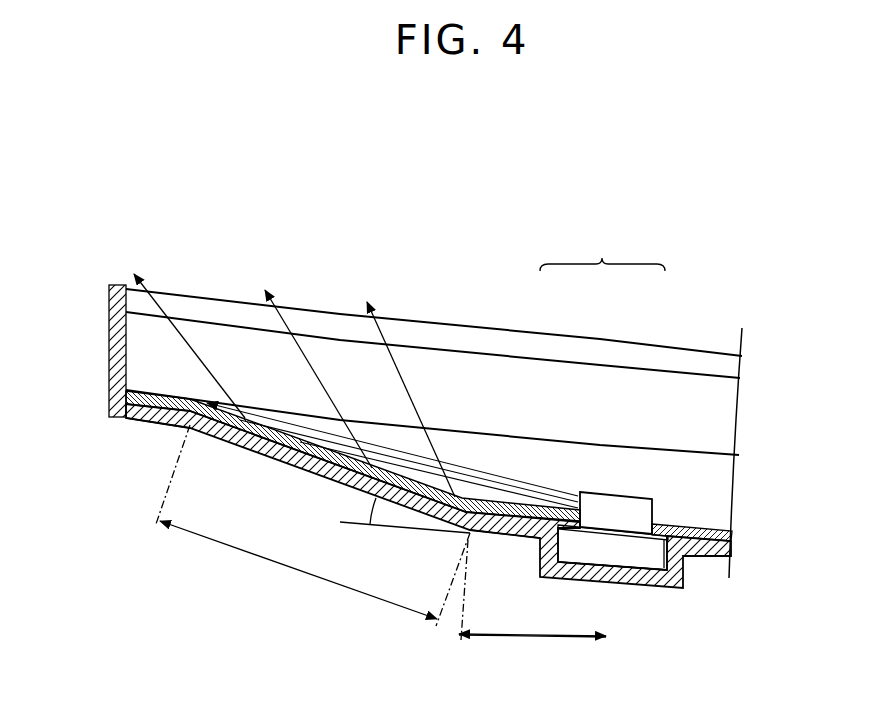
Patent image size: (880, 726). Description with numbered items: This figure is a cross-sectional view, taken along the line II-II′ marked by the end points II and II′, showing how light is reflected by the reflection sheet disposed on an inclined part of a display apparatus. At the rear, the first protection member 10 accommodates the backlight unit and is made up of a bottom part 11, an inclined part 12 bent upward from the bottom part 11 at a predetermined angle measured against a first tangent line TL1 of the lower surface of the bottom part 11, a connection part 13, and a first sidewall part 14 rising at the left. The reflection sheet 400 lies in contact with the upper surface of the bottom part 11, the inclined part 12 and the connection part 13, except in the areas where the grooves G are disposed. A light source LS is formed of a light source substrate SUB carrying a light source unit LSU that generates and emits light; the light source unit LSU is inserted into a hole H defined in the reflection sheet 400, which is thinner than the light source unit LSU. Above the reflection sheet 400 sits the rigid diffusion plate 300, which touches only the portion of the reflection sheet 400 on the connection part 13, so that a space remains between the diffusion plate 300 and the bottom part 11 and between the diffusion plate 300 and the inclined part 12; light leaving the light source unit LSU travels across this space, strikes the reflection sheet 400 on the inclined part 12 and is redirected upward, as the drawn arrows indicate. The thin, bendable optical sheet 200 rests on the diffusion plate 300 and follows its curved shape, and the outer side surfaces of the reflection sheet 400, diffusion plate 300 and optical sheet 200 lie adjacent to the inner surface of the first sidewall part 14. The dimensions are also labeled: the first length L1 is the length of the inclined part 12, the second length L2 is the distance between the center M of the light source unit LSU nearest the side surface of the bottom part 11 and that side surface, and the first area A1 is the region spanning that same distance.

The first protection member 10 is at (727, 553).
The bottom part 11 is at (505, 539).
The inclined part 12 is at (243, 436).
The connection part 13 is at (160, 420).
The first sidewall part 14 is at (108, 350).
The optical sheet 200 is at (728, 370).
The diffusion plate 300 is at (728, 420).
The reflection sheet 400 is at (727, 535).
The light source LS is at (602, 252).
The light source substrate SUB is at (580, 492).
The light source unit LSU is at (600, 505).
The hole H is at (637, 523).
The pocket bottom P is at (627, 581).
The groove G is at (652, 557).
The center of the light source unit M is at (618, 490).
The first tangent line TL1 is at (383, 522).
The first length L1 is at (313, 525).
The first area A1 is at (532, 590).
The second length L2 is at (532, 650).
The section line II-II' II is at (102, 442).
The section line II-II' II′ is at (724, 601).